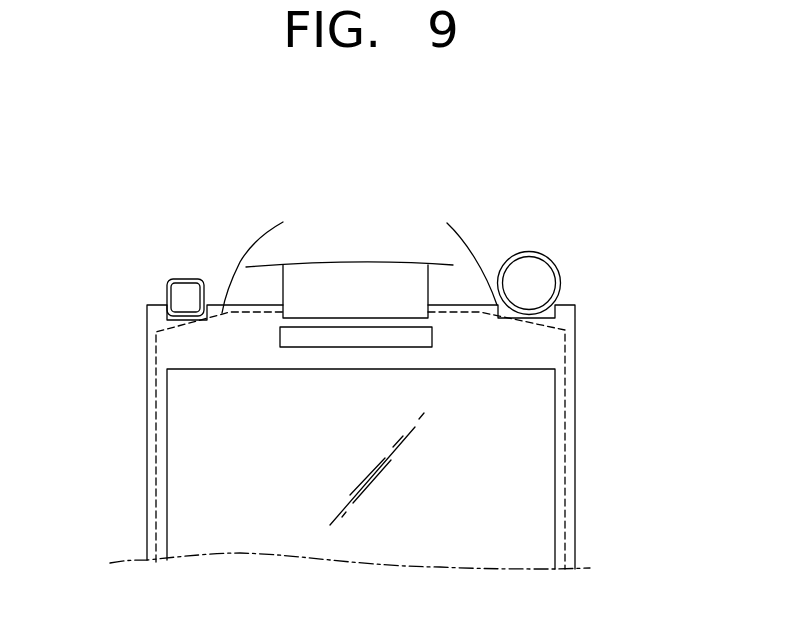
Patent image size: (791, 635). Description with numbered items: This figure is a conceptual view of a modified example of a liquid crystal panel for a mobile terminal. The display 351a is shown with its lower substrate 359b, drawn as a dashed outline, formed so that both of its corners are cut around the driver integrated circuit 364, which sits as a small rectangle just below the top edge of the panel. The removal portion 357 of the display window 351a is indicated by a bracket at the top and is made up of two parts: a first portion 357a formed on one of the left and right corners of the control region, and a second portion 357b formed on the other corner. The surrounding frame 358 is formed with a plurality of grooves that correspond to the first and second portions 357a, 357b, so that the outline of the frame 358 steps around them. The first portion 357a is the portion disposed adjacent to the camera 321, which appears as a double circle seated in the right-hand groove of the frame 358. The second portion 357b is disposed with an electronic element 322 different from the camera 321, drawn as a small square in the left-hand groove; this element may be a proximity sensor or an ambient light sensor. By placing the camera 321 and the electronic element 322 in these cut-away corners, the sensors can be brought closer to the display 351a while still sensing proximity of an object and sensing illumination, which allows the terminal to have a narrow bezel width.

The camera 321 is at (543, 252).
The electronic element 322 is at (185, 277).
The removal portion 357 is at (440, 145).
The first portion 357a is at (447, 223).
The second portion 357b is at (283, 222).
The driver integrated circuit 364 is at (293, 336).
The frame 358 is at (575, 342).
The lower substrate 359b is at (566, 387).
The display 351a is at (518, 478).